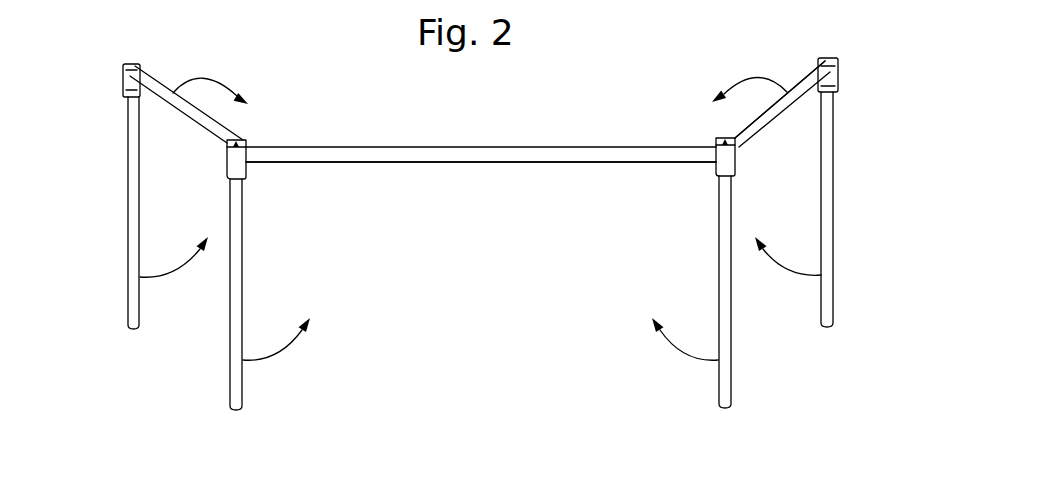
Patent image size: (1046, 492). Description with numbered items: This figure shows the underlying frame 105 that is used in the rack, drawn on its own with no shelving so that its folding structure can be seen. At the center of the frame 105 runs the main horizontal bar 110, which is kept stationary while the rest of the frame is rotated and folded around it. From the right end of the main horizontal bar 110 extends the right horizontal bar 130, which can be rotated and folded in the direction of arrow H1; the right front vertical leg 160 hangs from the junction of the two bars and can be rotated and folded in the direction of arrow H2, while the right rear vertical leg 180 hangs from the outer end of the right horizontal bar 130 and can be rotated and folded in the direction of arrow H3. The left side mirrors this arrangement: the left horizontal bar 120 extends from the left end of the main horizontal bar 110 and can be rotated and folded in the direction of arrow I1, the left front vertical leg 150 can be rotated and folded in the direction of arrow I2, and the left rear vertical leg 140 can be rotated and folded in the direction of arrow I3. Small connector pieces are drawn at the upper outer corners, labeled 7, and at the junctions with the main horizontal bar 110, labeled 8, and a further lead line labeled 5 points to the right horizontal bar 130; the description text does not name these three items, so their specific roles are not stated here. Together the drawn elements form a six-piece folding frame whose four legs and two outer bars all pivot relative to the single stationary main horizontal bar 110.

The frame assembly 5 is at (813, 80).
The upper corner connector 7 is at (130, 83).
The lower corner connector 8 is at (233, 167).
The underlying frame 105 is at (487, 208).
The main horizontal bar 110 is at (458, 152).
The left horizontal bar 120 is at (221, 134).
The right horizontal bar 130 is at (747, 128).
The left rear vertical leg 140 is at (130, 218).
The left front vertical leg 150 is at (238, 313).
The right front vertical leg 160 is at (725, 320).
The right rear vertical leg 180 is at (825, 213).
The arrow I1 is at (210, 79).
The arrow I2 is at (276, 356).
The arrow I3 is at (174, 257).
The arrow H1 is at (749, 77).
The arrow H2 is at (685, 354).
The arrow H3 is at (788, 256).